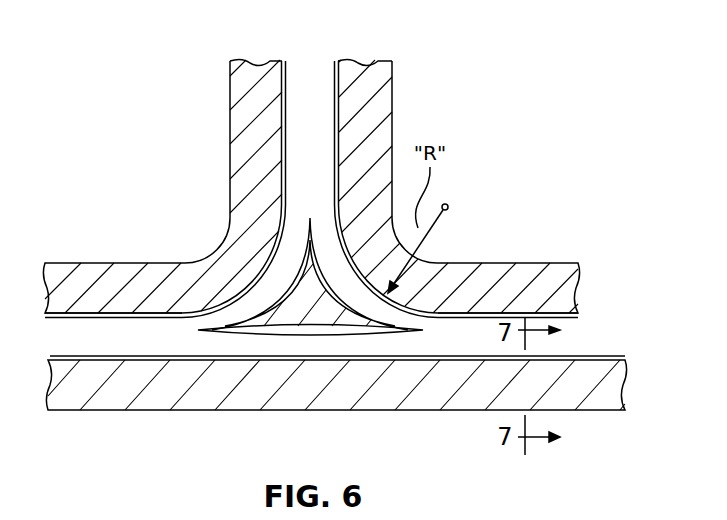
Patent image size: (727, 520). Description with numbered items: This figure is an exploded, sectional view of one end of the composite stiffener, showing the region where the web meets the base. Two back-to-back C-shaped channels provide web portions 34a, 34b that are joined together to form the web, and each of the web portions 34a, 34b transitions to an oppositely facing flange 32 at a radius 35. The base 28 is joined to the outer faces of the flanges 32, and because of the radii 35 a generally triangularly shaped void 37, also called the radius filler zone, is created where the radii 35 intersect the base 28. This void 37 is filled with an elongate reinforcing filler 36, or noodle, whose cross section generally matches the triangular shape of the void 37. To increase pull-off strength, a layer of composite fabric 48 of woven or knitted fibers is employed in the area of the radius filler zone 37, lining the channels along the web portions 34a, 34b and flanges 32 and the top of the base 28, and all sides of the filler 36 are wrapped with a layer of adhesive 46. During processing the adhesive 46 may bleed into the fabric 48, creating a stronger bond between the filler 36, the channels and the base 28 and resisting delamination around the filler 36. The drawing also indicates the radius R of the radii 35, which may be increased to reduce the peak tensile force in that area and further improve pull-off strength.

The base 28 is at (178, 383).
The flange 32 is at (80, 280).
The web portion 34a is at (250, 130).
The web portion 34b is at (365, 78).
The radius 35 is at (248, 267).
The reinforcing filler 36 is at (313, 315).
The void 37 is at (247, 302).
The layer of adhesive 46 is at (417, 336).
The layer of composite fabric 48 is at (282, 92).